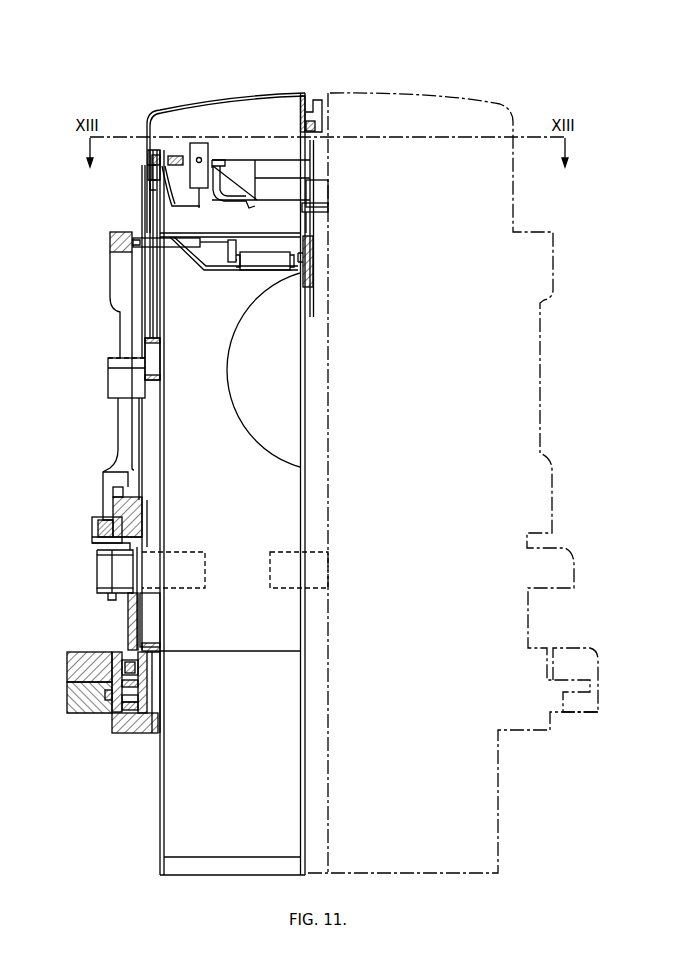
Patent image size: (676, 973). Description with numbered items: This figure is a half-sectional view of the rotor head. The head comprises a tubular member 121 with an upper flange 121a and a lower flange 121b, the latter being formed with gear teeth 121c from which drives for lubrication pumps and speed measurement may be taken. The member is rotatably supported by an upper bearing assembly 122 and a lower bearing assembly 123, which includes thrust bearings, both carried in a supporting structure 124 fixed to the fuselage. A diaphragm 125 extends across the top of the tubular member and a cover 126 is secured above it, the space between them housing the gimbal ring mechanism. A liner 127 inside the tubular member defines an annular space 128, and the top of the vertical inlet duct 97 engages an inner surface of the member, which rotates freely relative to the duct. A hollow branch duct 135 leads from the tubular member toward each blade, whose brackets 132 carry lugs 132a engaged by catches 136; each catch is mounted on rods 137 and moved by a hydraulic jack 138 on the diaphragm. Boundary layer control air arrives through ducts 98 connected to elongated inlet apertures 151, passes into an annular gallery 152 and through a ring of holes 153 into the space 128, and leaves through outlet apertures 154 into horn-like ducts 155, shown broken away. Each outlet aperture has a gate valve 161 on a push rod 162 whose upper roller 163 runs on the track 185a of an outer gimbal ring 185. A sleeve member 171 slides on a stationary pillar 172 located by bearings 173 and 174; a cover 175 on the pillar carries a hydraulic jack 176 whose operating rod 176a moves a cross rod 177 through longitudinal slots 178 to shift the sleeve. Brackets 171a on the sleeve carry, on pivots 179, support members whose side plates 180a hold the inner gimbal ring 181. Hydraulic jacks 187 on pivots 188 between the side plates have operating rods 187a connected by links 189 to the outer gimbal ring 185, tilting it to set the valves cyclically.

The vertical inlet duct 97 is at (160, 797).
The ducts for boundary layer control air 98 is at (104, 594).
The tubular member 121 is at (143, 483).
The upper flange 121a is at (118, 505).
The lower flange 121b is at (130, 733).
The gear teeth 121c is at (110, 733).
The upper bearing assembly 122 is at (92, 533).
The lower bearing assembly 123 is at (108, 705).
The supporting structure 124 is at (128, 630).
The diaphragm 125 is at (221, 270).
The cover 126 is at (262, 97).
The liner 127 is at (165, 529).
The annular space 128 is at (157, 503).
The brackets 132 is at (118, 332).
The lugs 132a is at (113, 290).
The hollow branch duct 135 is at (285, 370).
The catches 136 is at (110, 242).
The rods 137 is at (230, 250).
The hydraulic jack 138 is at (262, 258).
The elongated inlet apertures 151 is at (124, 595).
The annular gallery 152 is at (142, 622).
The ring of holes 153 is at (150, 570).
The outlet apertures 154 is at (143, 405).
The horn-like duct 155 is at (115, 400).
The gate valve 161 is at (150, 372).
The push rod 162 is at (157, 300).
The rollers 163 is at (147, 163).
The sleeve member 171 is at (282, 180).
The brackets 171a is at (244, 168).
The stationary pillar 172 is at (316, 147).
The bearing 173 is at (314, 266).
The bearing 174 is at (316, 125).
The cover 175 is at (309, 106).
The hydraulic jack 176 is at (316, 159).
The operating rod 176a is at (329, 190).
The cross rod 177 is at (316, 208).
The longitudinal slots 178 is at (311, 224).
The pivots 179 is at (218, 153).
The side plates 180a is at (250, 205).
The inner gimbal ring 181 is at (182, 152).
The outer gimbal ring 185 is at (160, 160).
The track 185a is at (154, 158).
The hydraulic jacks 187 is at (199, 143).
The operating rods 187a is at (209, 198).
The pivots 188 is at (201, 160).
The links 189 is at (176, 204).